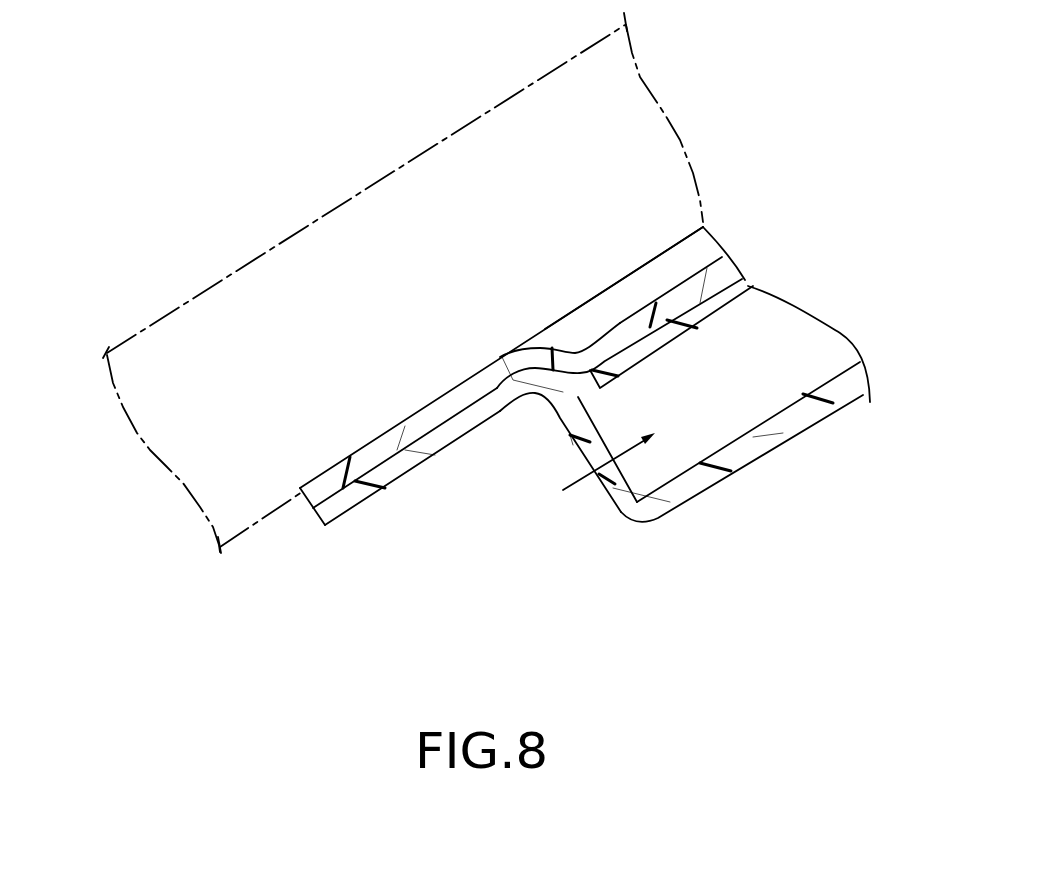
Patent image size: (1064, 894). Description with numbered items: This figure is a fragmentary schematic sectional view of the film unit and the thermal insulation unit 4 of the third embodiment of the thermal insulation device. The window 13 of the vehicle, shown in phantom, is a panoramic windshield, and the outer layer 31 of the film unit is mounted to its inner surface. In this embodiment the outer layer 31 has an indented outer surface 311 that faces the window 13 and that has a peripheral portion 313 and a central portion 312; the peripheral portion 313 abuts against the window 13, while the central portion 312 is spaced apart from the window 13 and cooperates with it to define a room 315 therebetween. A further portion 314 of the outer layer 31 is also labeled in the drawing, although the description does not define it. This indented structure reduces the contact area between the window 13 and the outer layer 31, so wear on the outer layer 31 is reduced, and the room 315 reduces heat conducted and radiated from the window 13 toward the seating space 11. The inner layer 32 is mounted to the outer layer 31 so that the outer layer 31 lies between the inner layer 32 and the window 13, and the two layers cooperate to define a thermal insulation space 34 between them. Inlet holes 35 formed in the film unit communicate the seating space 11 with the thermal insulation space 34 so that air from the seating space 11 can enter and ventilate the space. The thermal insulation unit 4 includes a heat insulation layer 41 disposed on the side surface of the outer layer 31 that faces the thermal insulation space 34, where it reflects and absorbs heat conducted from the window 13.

The window 13 is at (577, 97).
The seating space 11 is at (524, 481).
The outer layer 31 is at (678, 297).
The outer surface 311 is at (407, 80).
The central portion 312 is at (612, 325).
The peripheral portion 313 is at (427, 403).
The second layer 314 is at (554, 351).
The room 315 is at (635, 290).
The inner layer 32 is at (763, 450).
The thermal insulation space 34 is at (796, 352).
The inlet holes 35 is at (606, 478).
The thermal insulation unit 4 is at (751, 272).
The heat insulation layer 41 is at (744, 285).